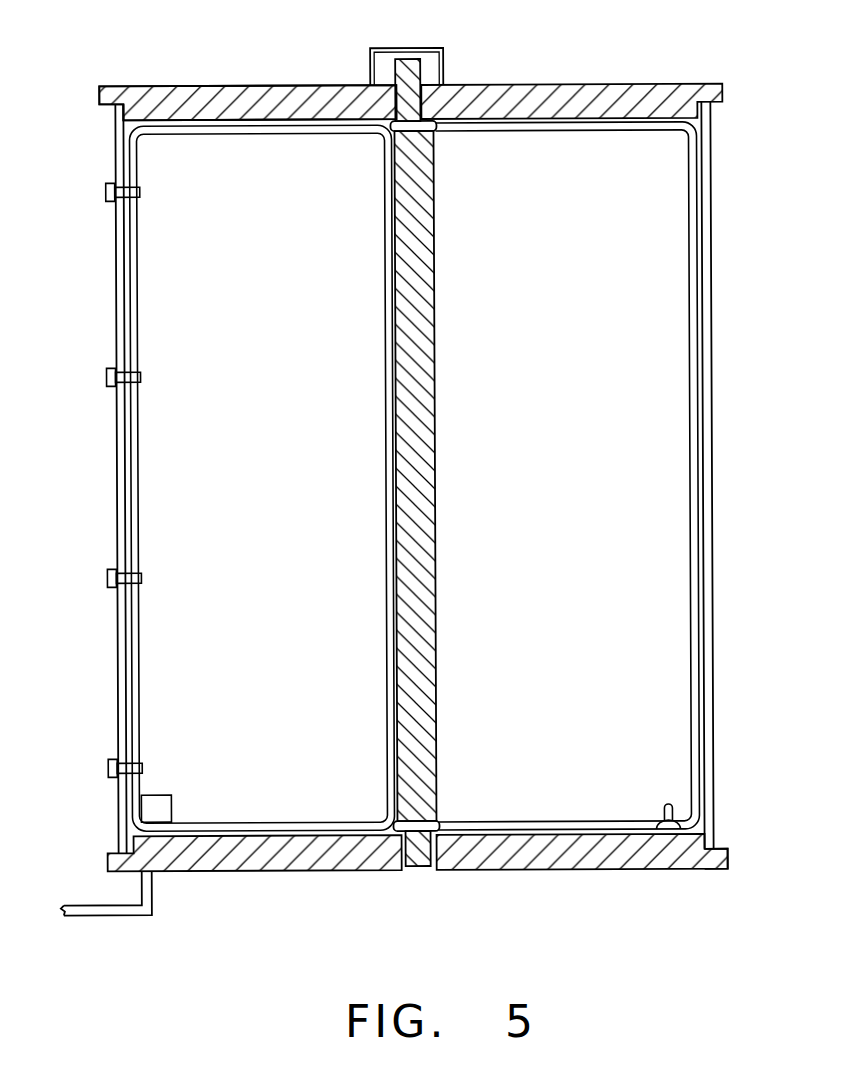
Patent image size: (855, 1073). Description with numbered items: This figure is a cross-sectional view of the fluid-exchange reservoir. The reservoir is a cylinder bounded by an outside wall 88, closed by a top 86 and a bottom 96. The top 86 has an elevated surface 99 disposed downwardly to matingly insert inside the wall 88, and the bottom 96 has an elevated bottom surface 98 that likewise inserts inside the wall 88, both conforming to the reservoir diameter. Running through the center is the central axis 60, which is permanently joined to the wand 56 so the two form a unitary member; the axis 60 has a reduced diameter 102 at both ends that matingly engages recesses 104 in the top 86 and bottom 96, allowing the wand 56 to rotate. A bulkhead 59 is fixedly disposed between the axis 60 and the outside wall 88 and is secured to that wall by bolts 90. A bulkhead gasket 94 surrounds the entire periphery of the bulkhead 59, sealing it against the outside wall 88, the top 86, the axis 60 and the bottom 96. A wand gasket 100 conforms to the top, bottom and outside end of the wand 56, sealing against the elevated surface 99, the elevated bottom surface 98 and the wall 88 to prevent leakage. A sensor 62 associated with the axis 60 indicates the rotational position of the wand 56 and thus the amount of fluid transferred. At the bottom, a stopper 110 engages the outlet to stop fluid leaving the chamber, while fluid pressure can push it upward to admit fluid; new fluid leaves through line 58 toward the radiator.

The wand 56 is at (619, 475).
The line 58 is at (130, 913).
The bulkhead 59 is at (202, 478).
The central axis 60 is at (435, 449).
The sensor 62 is at (430, 47).
The top 86 is at (567, 83).
The outside wall 88 is at (115, 287).
The bolts 90 is at (105, 188).
The bulkhead gasket 94 is at (140, 535).
The bottom 96 is at (712, 870).
The elevated bottom surface 98 is at (555, 843).
The elevated surface 99 is at (232, 120).
The wand gasket 100 is at (666, 131).
The reduced diameter 102 is at (445, 77).
The recesses 104 is at (428, 876).
The stopper 110 is at (662, 818).